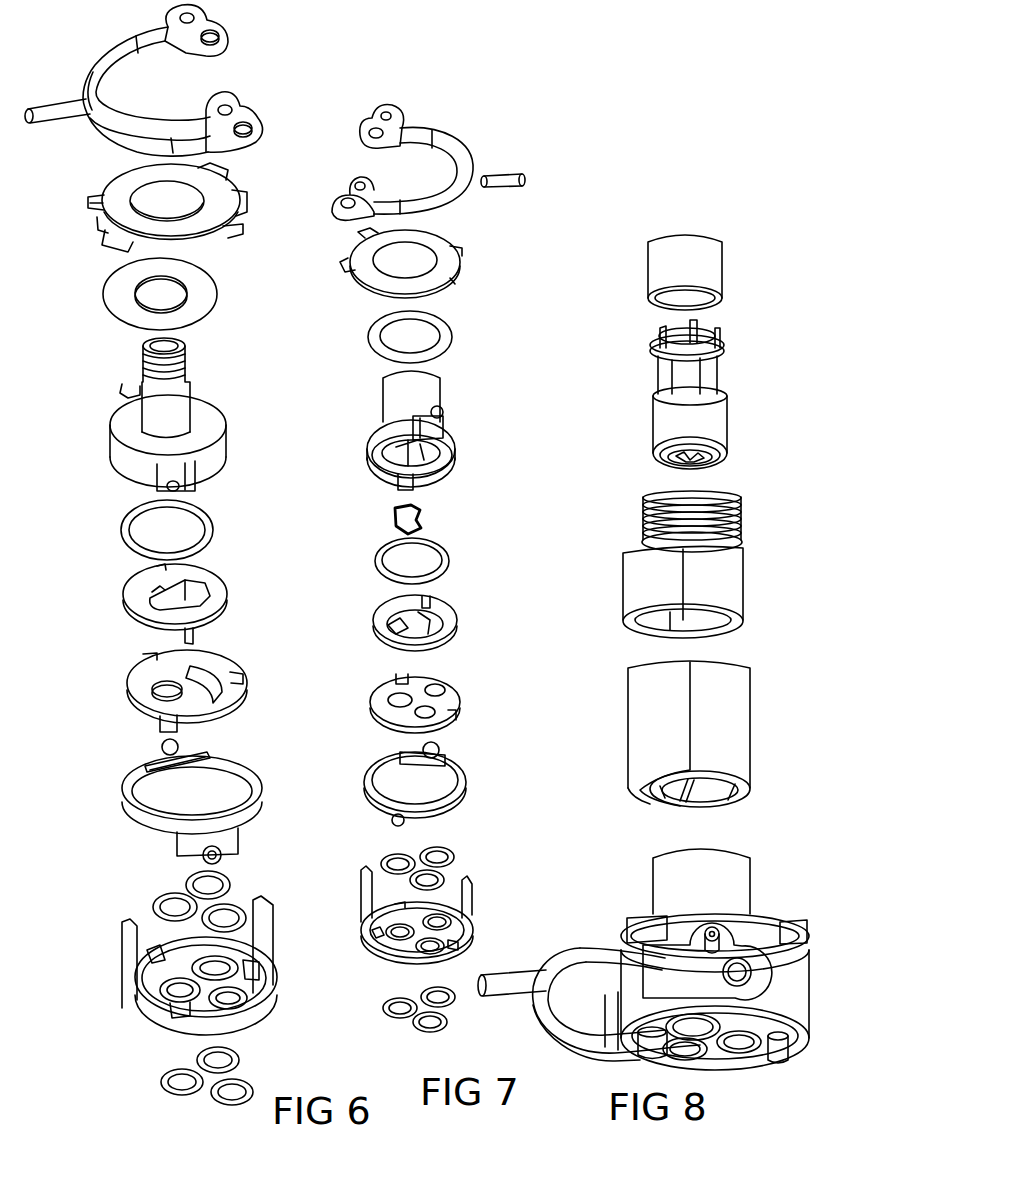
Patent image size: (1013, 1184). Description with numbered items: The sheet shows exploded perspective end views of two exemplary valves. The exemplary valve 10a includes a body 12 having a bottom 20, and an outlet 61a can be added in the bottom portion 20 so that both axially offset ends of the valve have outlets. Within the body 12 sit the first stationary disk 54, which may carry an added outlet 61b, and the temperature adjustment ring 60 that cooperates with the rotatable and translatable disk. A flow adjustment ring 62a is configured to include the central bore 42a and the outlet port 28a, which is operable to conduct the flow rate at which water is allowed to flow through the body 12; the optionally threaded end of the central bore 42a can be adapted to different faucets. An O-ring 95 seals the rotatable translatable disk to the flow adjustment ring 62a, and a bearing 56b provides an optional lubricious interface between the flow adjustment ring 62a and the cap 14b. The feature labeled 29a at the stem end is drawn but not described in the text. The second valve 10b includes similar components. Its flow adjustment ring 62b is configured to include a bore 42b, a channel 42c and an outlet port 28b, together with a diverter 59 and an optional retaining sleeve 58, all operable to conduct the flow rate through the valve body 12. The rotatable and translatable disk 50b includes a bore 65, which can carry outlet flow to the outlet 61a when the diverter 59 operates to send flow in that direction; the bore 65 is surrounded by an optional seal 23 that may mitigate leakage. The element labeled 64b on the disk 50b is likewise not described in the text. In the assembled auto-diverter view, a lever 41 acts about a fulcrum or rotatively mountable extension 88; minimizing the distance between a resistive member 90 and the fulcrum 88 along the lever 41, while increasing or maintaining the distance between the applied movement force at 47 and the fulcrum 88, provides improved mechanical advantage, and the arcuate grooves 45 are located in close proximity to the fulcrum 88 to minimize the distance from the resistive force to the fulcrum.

In FIG. 6, the exemplary valve 10a is at (95, 38).
In FIG. 6, the cap 14b is at (93, 190).
In FIG. 6, the bearing 56b is at (116, 275).
In FIG. 6, the stem opening 29a is at (145, 340).
In FIG. 6, the central bore 42a is at (184, 343).
In FIG. 6, the outlet port 28a is at (142, 347).
In FIG. 6, the flow adjustment ring 62a is at (212, 395).
In FIG. 6, the O-ring 95 is at (126, 520).
In FIG. 6, the first stationary disk 54 is at (222, 662).
In FIG. 6, the outlet 61b is at (130, 686).
In FIG. 7, the outlet 61b is at (392, 704).
In FIG. 6, the body 12 is at (122, 994).
In FIG. 7, the body 12 is at (362, 908).
In FIG. 6, the outlet 61a is at (165, 1000).
In FIG. 7, the outlet 61a is at (400, 945).
In FIG. 6, the bottom 20 is at (175, 1040).
In FIG. 7, the bottom 20 is at (474, 940).
In FIG. 7, the flow adjustment ring 62b is at (452, 426).
In FIG. 7, the channel 42c is at (388, 470).
In FIG. 7, the bore 42b is at (428, 452).
In FIG. 7, the seal 23 is at (386, 518).
In FIG. 7, the rotatable and translatable disk 50b is at (450, 612).
In FIG. 7, the bore 65 is at (388, 640).
In FIG. 7, the cavity 64b is at (432, 646).
In FIG. 7, the temperature adjustment ring 60 is at (462, 765).
In FIG. 8, the valve 10b is at (737, 232).
In FIG. 8, the retaining sleeve 58 is at (712, 270).
In FIG. 8, the diverter 59 is at (725, 420).
In FIG. 8, the outlet port 28b is at (730, 495).
In FIG. 8, the lever 41 is at (655, 970).
In FIG. 8, the arcuate grooves 45 is at (740, 946).
In FIG. 8, the fulcrum 88 is at (740, 972).
In FIG. 8, the resistive member 90 is at (708, 933).
In FIG. 8, the applied movement force 47 is at (485, 1004).